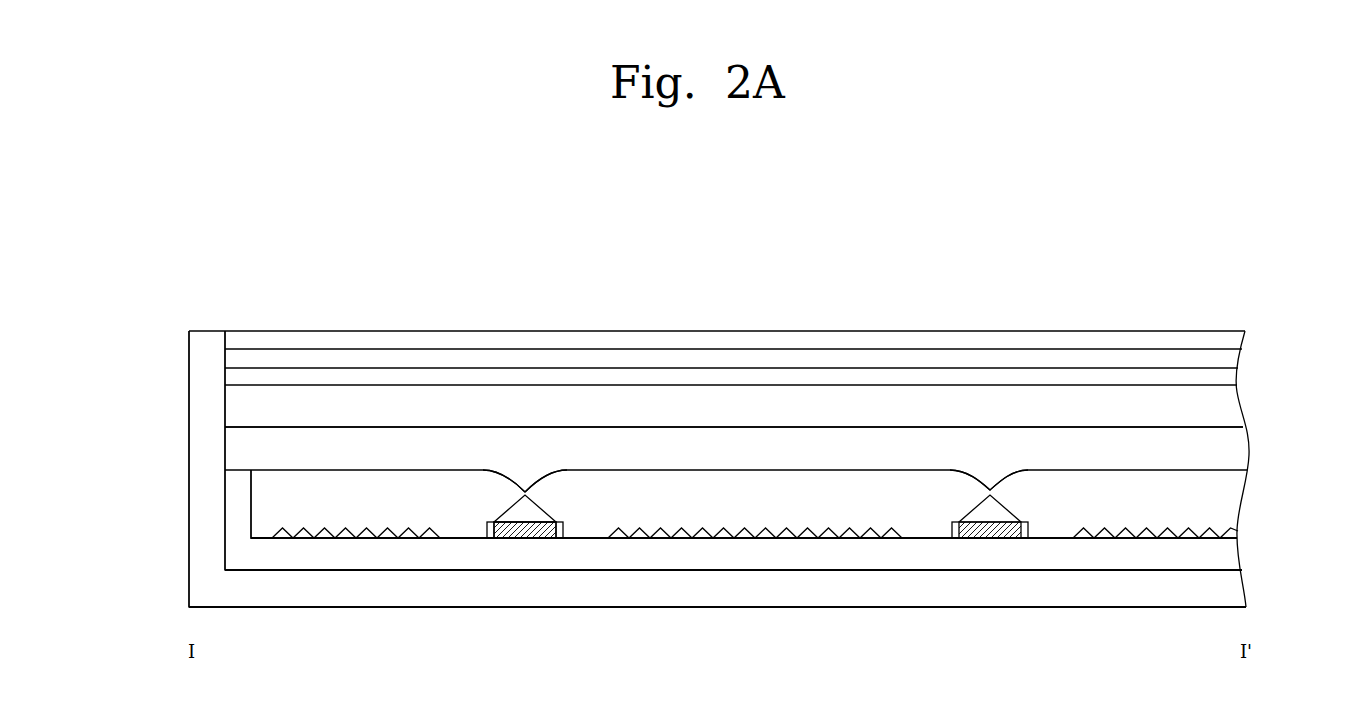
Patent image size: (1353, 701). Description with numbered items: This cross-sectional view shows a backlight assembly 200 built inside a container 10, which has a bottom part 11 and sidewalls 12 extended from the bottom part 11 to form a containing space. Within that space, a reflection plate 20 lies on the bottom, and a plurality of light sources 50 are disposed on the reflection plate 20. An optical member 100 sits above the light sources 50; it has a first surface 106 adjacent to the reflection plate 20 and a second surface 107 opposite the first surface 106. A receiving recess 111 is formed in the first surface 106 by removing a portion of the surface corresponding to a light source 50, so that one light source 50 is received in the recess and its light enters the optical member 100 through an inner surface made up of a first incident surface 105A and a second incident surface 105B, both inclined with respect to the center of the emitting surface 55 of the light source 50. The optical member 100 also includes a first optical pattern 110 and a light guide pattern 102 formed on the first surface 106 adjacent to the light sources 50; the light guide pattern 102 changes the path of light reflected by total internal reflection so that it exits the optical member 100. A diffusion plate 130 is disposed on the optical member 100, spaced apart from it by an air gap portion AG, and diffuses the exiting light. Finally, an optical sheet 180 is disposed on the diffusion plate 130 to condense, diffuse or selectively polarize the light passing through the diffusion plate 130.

The backlight assembly 200 is at (1208, 299).
The container 10 is at (113, 545).
The bottom part 11 is at (243, 596).
The sidewalls 12 is at (200, 554).
The optical sheet 180 is at (1257, 331).
The diffusion plate 130 is at (1235, 407).
The air gap portion AG is at (1240, 451).
The second surface 107 is at (348, 470).
The first incident surface 105A is at (510, 509).
The second incident surface 105B is at (540, 510).
The first optical pattern 110 is at (989, 472).
The optical member 100 is at (1233, 502).
The light guide pattern 102 is at (255, 538).
The first surface 106 is at (463, 538).
The reflection plate 20 is at (1240, 555).
The light sources 50 is at (512, 538).
The emitting surface 55 is at (545, 505).
The receiving recess 111 is at (523, 514).